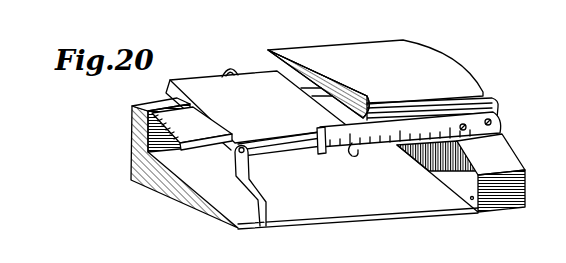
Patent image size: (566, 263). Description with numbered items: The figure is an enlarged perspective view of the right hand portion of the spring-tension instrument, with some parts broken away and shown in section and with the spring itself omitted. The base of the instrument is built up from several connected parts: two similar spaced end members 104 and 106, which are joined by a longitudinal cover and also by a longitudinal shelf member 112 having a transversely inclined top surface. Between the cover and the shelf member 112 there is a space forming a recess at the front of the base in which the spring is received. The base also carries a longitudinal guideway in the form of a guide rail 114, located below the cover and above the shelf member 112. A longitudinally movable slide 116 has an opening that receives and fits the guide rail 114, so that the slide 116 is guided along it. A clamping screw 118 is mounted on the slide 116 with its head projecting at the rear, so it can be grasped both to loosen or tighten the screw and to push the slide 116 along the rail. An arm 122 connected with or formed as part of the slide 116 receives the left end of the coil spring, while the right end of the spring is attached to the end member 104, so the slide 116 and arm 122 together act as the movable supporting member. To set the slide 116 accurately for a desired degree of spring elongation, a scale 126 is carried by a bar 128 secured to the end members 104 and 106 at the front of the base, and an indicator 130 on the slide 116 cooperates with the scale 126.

The end member 104 is at (503, 157).
The end member 106 is at (432, 62).
The shelf member 112 is at (173, 193).
The guide rail 114 is at (194, 130).
The slide 116 is at (250, 82).
The clamping screw 118 is at (228, 71).
The arm 122 is at (252, 180).
The scale 126 is at (325, 153).
The bar 128 is at (420, 127).
The indicator 130 is at (357, 153).